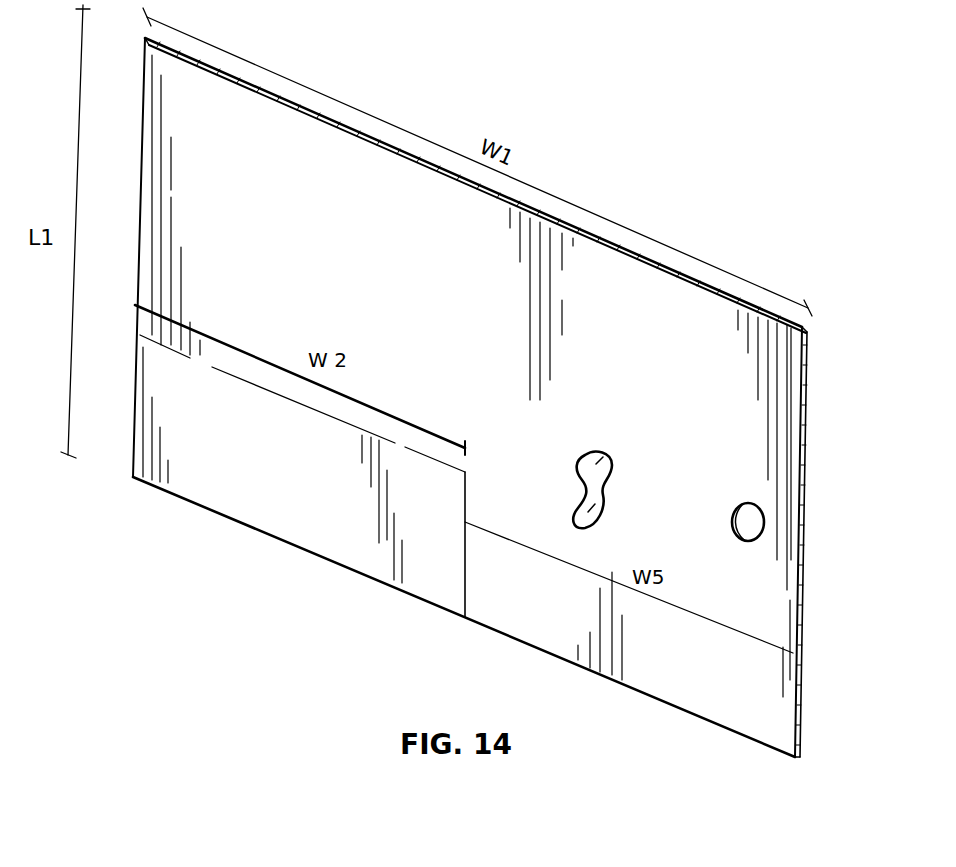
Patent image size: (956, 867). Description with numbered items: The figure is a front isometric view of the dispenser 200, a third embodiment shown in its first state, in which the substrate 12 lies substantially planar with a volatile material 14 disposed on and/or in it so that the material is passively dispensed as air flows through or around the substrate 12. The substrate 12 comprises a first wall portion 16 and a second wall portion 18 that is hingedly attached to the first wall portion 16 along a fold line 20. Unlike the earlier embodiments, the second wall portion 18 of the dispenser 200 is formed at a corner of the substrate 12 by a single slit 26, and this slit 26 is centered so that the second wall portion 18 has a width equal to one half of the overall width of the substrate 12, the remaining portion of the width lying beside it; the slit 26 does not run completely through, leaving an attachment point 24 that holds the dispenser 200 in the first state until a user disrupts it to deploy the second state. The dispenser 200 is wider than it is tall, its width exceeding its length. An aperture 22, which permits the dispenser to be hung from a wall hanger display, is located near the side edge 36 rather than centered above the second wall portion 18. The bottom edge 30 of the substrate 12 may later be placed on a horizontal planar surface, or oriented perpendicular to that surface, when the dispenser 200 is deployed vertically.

The dispenser 200 is at (485, 397).
The substrate 12 is at (806, 338).
The volatile material 14 is at (613, 463).
The first wall portion 16 is at (765, 418).
The second wall portion 18 is at (245, 500).
The fold line 20 is at (160, 343).
The aperture 22 is at (766, 532).
The attachment point 24 is at (462, 617).
The slit 26 is at (472, 542).
The bottom edge 30 is at (796, 758).
The side edge 36 is at (804, 483).